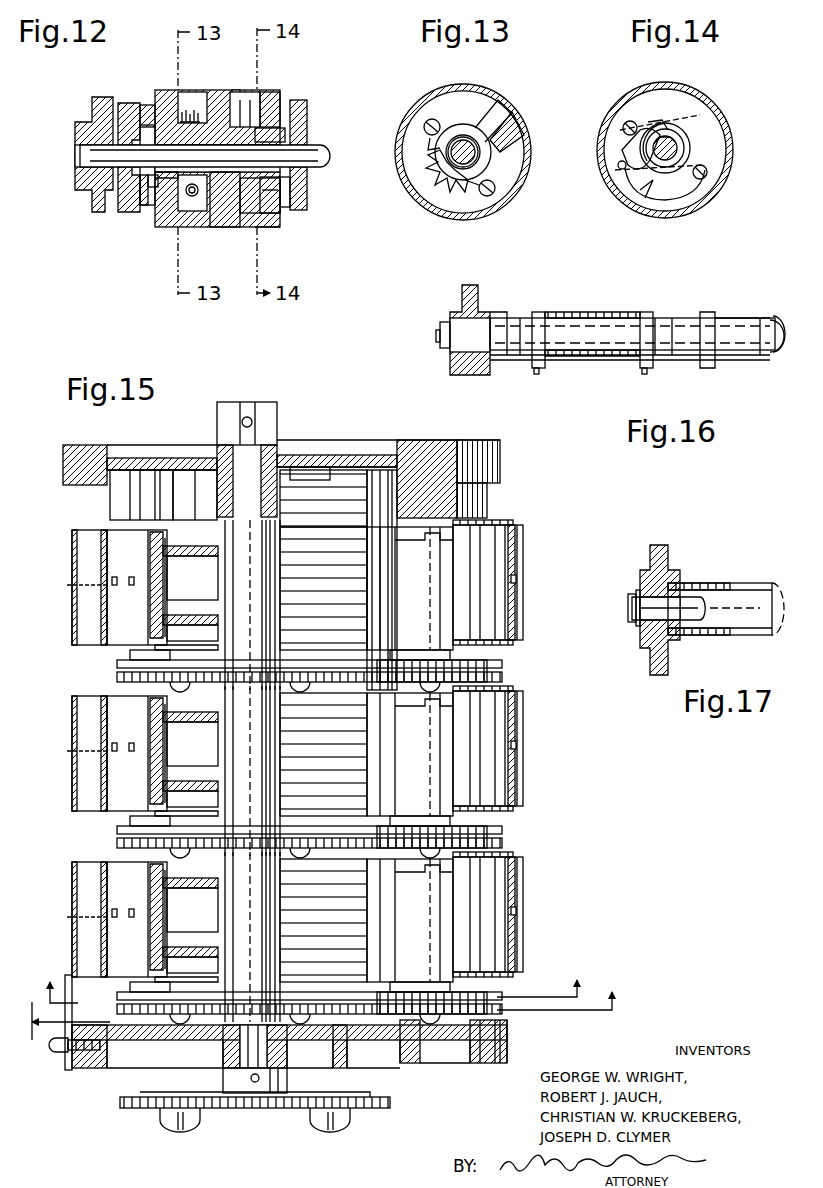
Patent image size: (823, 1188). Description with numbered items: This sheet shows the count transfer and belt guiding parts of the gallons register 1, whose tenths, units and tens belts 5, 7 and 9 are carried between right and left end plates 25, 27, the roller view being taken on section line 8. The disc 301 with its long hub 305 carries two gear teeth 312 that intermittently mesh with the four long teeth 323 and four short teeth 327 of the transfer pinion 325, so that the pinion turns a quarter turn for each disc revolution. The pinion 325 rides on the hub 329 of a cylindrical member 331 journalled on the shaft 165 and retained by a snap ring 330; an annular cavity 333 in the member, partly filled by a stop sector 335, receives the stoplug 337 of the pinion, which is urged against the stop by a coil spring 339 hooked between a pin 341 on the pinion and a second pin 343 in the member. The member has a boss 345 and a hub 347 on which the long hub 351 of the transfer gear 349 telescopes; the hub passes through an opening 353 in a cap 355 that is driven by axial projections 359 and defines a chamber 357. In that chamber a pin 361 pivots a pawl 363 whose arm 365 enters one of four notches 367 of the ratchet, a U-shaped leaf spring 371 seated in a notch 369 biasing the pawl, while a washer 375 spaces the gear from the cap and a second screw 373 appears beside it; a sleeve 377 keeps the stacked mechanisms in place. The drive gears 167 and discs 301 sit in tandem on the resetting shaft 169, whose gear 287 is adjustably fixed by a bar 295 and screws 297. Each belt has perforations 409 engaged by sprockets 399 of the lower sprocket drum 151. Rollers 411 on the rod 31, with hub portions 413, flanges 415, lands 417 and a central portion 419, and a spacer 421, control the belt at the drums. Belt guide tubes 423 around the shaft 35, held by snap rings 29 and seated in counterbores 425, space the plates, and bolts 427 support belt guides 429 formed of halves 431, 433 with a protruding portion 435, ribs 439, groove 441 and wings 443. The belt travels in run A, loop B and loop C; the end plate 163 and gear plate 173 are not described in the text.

In FIG. 15, the gallons register 1 is at (530, 708).
In FIG. 15, the tenths belt 5 is at (75, 934).
In FIG. 15, the units belt 7 is at (75, 805).
In FIG. 15, the section line 8 is at (312, 973).
In FIG. 15, the tens belt 9 is at (72, 640).
In FIG. 12, the right end plate 25 is at (80, 135).
In FIG. 16, the right end plate 25 is at (455, 366).
In FIG. 17, the right end plate 25 is at (660, 565).
In FIG. 15, the right end plate 25 is at (100, 1045).
In FIG. 15, the left end plate 27 is at (92, 450).
In FIG. 16, the snap ring 29 is at (444, 324).
In FIG. 17, the snap ring 29 is at (632, 596).
In FIG. 16, the rod 31 is at (437, 335).
In FIG. 17, the shaft 35 is at (637, 622).
In FIG. 15, the lower sprocket drum 151 is at (85, 553).
In FIG. 12, the flange plate 163 is at (122, 108).
In FIG. 15, the flange plate 163 is at (505, 1032).
In FIG. 12, the shaft 165 is at (312, 156).
In FIG. 13, the shaft 165 is at (478, 158).
In FIG. 14, the shaft 165 is at (678, 148).
In FIG. 15, the drive gear 167 is at (117, 666).
In FIG. 15, the resetting shaft 169 is at (240, 468).
In FIG. 15, the gear plate 173 is at (117, 678).
In FIG. 15, the gear 287 is at (225, 1108).
In FIG. 15, the bar 295 is at (372, 1092).
In FIG. 15, the screw 297 is at (172, 1126).
In FIG. 15, the disc 301 is at (240, 656).
In FIG. 15, the hub 305 is at (235, 565).
In FIG. 15, the gear teeth 312 is at (338, 648).
In FIG. 12, the long teeth 323 is at (145, 112).
In FIG. 12, the transfer pinion 325 is at (172, 192).
In FIG. 15, the transfer pinion 325 is at (502, 812).
In FIG. 12, the short teeth 327 is at (150, 110).
In FIG. 12, the hub 329 is at (158, 210).
In FIG. 12, the snap ring 330 is at (142, 208).
In FIG. 12, the cylindrical member 331 is at (207, 230).
In FIG. 13, the cylindrical member 331 is at (433, 88).
In FIG. 15, the cylindrical member 331 is at (505, 765).
In FIG. 12, the annular cavity 333 is at (195, 100).
In FIG. 13, the annular cavity 333 is at (470, 125).
In FIG. 13, the stop sector 335 is at (500, 112).
In FIG. 13, the stoplug 337 is at (515, 125).
In FIG. 12, the coil spring 339 is at (190, 195).
In FIG. 13, the coil spring 339 is at (440, 165).
In FIG. 12, the pin 341 is at (185, 108).
In FIG. 13, the pin 341 is at (430, 122).
In FIG. 13, the second pin 343 is at (492, 196).
In FIG. 12, the boss 345 is at (240, 190).
In FIG. 12, the hub 347 is at (292, 138).
In FIG. 14, the hub 347 is at (690, 132).
In FIG. 12, the transfer gear 349 is at (302, 98).
In FIG. 15, the transfer gear 349 is at (480, 670).
In FIG. 12, the gear hub 351 is at (285, 182).
In FIG. 14, the gear hub 351 is at (690, 152).
In FIG. 12, the opening 353 is at (275, 200).
In FIG. 12, the cap 355 is at (275, 92).
In FIG. 14, the cap 355 is at (705, 100).
In FIG. 15, the cap 355 is at (505, 725).
In FIG. 12, the chamber 357 is at (258, 108).
In FIG. 14, the chamber 357 is at (670, 100).
In FIG. 12, the axial projections 359 is at (236, 92).
In FIG. 15, the axial projections 359 is at (437, 736).
In FIG. 14, the pin 361 is at (628, 122).
In FIG. 14, the pawl 363 is at (628, 145).
In FIG. 14, the pawl arm 365 is at (658, 128).
In FIG. 14, the axial notches 367 is at (683, 188).
In FIG. 14, the notch 369 is at (620, 168).
In FIG. 12, the leaf spring 371 is at (262, 228).
In FIG. 14, the leaf spring 371 is at (650, 186).
In FIG. 14, the screw 373 is at (707, 174).
In FIG. 12, the washer 375 is at (283, 190).
In FIG. 15, the sleeve 377 is at (430, 602).
In FIG. 15, the sprocket 399 is at (90, 585).
In FIG. 15, the rectangular perforations 409 is at (125, 580).
In FIG. 16, the roller 411 is at (507, 366).
In FIG. 16, the hub portions 413 is at (518, 330).
In FIG. 16, the radial flanges 415 is at (537, 372).
In FIG. 16, the land portions 417 is at (540, 340).
In FIG. 16, the central cylindrical portion 419 is at (605, 352).
In FIG. 16, the spacer 421 is at (500, 320).
In FIG. 17, the belt guide tube 423 is at (758, 600).
In FIG. 15, the belt guide tube 423 is at (470, 482).
In FIG. 17, the counterbore 425 is at (682, 605).
In FIG. 15, the bolt 427 is at (367, 500).
In FIG. 15, the belt guide 429 is at (468, 545).
In FIG. 15, the guide part 431 is at (208, 616).
In FIG. 15, the guide part 433 is at (348, 540).
In FIG. 15, the protruding portion 435 is at (150, 626).
In FIG. 15, the longitudinal rib 439 is at (130, 535).
In FIG. 15, the groove 441 is at (160, 578).
In FIG. 15, the wings 443 is at (500, 523).
In FIG. 15, the run A is at (75, 620).
In FIG. 15, the loop B is at (526, 555).
In FIG. 15, the loop C is at (115, 618).